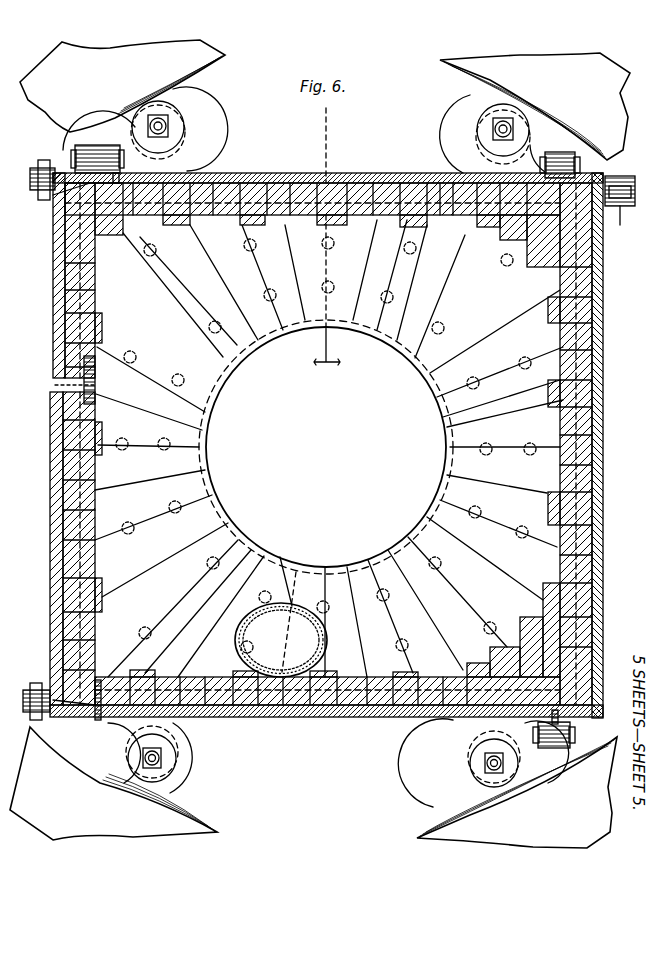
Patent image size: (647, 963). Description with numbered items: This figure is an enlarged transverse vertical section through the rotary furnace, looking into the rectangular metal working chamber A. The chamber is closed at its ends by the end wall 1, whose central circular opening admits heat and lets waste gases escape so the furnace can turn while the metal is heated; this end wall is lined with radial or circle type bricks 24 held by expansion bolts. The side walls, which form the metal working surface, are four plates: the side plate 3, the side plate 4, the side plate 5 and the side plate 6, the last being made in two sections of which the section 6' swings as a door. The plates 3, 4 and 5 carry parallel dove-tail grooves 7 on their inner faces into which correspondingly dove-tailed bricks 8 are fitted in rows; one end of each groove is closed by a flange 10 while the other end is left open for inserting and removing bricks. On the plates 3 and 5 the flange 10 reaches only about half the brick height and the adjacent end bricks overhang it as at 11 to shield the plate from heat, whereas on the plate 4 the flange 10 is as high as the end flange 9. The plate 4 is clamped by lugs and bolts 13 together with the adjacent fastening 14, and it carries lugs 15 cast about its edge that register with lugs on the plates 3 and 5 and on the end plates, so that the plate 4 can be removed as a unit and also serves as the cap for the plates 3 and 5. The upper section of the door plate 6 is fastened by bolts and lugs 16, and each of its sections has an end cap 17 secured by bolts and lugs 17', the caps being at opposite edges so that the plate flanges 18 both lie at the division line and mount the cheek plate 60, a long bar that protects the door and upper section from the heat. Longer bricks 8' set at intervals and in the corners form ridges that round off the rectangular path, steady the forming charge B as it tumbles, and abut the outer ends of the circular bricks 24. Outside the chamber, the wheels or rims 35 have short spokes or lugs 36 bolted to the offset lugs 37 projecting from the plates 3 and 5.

The end wall 1 is at (240, 389).
The side plate 3 is at (365, 181).
The side plate 4 is at (560, 445).
The side plate 5 is at (289, 712).
The side plate 6 is at (54, 275).
The door section 6' is at (54, 548).
The dove-tail grooves 7 is at (336, 118).
The wall blocks 8 is at (289, 452).
The longer bricks 8' is at (327, 446).
The end flange 9 is at (30, 175).
The flange 10 is at (76, 160).
The overhanging end bricks 11 is at (128, 240).
The lugs and bolts 13 is at (620, 210).
The bolt 14 is at (614, 178).
The lugs 15 is at (557, 160).
The bolts and lugs 16 is at (97, 149).
The end cap 17 is at (57, 459).
The bolts and lugs 17' is at (28, 440).
The plate flanges 18 is at (60, 385).
The bricks 24 is at (242, 552).
The wheels 35 is at (55, 100).
The spokes 36 is at (190, 96).
The offset lugs 37 is at (186, 141).
The cheek plate 60 is at (97, 385).
The metal working chamber A is at (441, 178).
The ball B is at (322, 647).